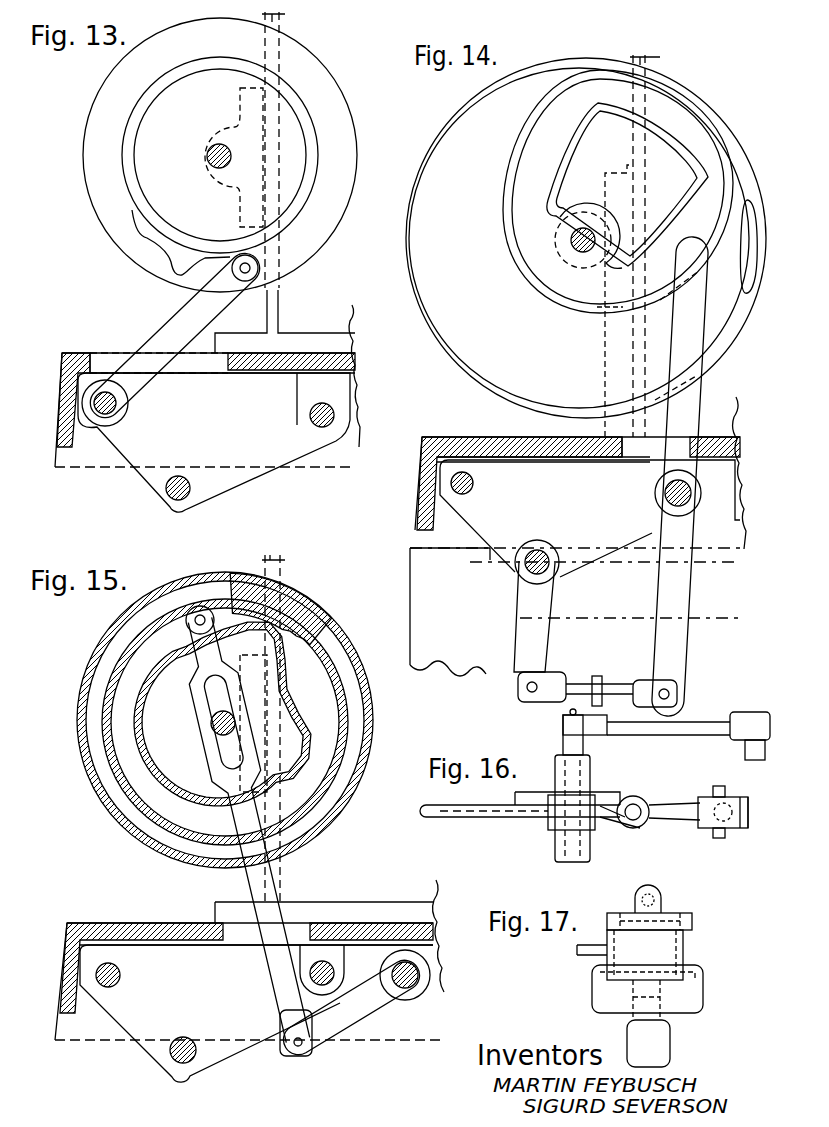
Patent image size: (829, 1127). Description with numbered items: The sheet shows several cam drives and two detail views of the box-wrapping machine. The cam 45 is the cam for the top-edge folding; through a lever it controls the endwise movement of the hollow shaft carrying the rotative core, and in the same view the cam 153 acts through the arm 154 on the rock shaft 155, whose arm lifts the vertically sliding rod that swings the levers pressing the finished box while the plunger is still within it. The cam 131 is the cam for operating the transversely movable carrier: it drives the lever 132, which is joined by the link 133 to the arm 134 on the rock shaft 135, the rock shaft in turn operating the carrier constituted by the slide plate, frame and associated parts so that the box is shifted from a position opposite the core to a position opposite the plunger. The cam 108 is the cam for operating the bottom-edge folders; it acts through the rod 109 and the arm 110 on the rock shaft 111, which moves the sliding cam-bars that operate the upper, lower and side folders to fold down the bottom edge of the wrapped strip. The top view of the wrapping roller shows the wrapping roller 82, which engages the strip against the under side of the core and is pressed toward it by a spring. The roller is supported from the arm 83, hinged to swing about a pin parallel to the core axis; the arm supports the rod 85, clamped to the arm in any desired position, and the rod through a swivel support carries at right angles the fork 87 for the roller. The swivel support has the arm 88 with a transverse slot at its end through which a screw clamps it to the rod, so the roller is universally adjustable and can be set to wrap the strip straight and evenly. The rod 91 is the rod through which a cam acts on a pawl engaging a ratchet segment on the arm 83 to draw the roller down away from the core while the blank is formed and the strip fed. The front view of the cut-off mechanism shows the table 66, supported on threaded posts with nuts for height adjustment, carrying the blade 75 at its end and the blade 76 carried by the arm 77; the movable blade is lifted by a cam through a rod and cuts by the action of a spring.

In FIG. 13, the cam 45 is at (100, 96).
In FIG. 13, the cam 153 is at (136, 212).
In FIG. 13, the arm 154 is at (168, 326).
In FIG. 13, the rock shaft 155 is at (112, 412).
In FIG. 15, the rock shaft 155 is at (120, 979).
In FIG. 13, the rock shaft 111 is at (310, 415).
In FIG. 14, the rock shaft 111 is at (665, 495).
In FIG. 15, the rock shaft 111 is at (410, 982).
In FIG. 13, the rock shaft 135 is at (185, 480).
In FIG. 14, the rock shaft 135 is at (537, 548).
In FIG. 15, the rock shaft 135 is at (189, 1040).
In FIG. 14, the cam 131 is at (692, 99).
In FIG. 14, the lever 132 is at (690, 416).
In FIG. 14, the arm 134 is at (523, 606).
In FIG. 14, the link 133 is at (616, 684).
In FIG. 15, the cam 108 is at (83, 692).
In FIG. 15, the rod 109 is at (252, 883).
In FIG. 15, the arm 110 is at (367, 1022).
In FIG. 16, the rod 91 is at (684, 728).
In FIG. 16, the rod 85 is at (498, 817).
In FIG. 16, the arm 83 is at (553, 823).
In FIG. 16, the arm 88 is at (641, 822).
In FIG. 16, the fork 87 is at (705, 828).
In FIG. 16, the wrapping roller 82 is at (746, 828).
In FIG. 17, the arm 77 is at (692, 917).
In FIG. 17, the blade 76 is at (684, 950).
In FIG. 17, the blade 75 is at (690, 990).
In FIG. 17, the table 66 is at (670, 1048).